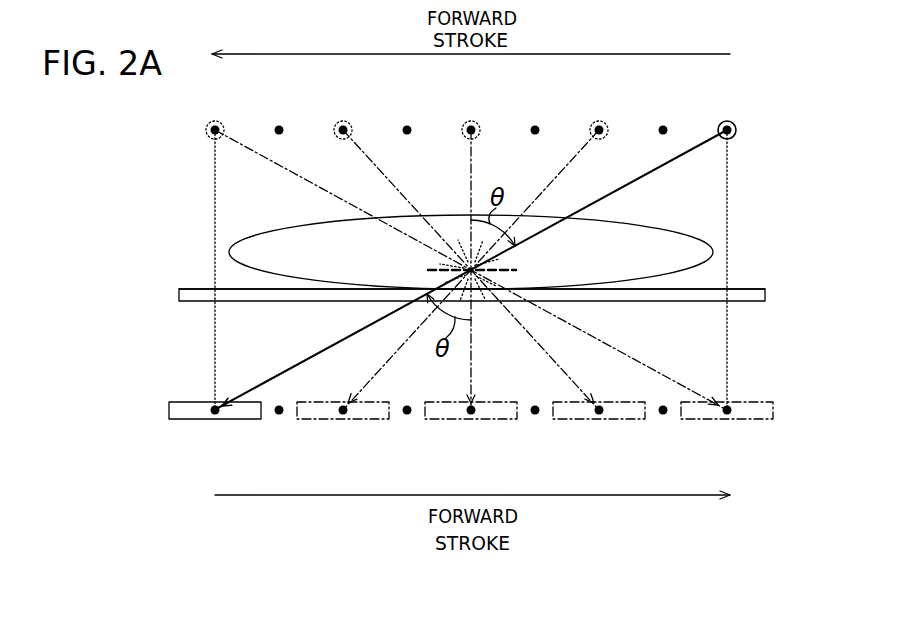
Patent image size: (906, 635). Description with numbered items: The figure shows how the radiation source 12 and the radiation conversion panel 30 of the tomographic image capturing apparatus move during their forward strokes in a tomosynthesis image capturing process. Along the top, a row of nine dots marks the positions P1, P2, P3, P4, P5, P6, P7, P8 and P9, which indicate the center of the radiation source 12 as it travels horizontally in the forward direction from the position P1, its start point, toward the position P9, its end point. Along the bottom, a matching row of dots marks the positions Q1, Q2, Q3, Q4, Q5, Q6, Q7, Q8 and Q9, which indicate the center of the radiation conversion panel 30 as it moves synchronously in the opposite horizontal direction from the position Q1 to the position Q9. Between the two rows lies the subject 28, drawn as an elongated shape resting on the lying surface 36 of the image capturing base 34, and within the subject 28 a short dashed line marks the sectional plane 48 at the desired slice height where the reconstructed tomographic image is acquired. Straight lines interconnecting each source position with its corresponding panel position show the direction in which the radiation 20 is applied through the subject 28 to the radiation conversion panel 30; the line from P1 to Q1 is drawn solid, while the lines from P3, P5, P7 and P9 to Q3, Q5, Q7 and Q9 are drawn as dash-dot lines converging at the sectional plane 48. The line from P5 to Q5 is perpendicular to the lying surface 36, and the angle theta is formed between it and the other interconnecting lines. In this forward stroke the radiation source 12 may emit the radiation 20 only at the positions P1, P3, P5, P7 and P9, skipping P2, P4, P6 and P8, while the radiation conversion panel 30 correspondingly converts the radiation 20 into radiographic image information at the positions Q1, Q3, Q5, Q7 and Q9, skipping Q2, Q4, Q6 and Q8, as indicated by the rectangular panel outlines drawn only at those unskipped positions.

The radiation source 12 is at (206, 140).
The radiation 20 is at (696, 174).
The subject 28 is at (681, 236).
The radiation conversion panel 30 is at (183, 401).
The image capturing base 34 is at (765, 296).
The lying surface 36 is at (764, 289).
The sectional plane 48 is at (515, 270).
The position P1 is at (726, 124).
The position P2 is at (662, 124).
The position P3 is at (598, 124).
The position P4 is at (534, 124).
The position P5 is at (470, 124).
The position P6 is at (406, 124).
The position P7 is at (342, 124).
The position P8 is at (278, 124).
The position P9 is at (214, 124).
The position Q1 is at (215, 415).
The position Q2 is at (279, 415).
The position Q3 is at (343, 415).
The position Q4 is at (407, 415).
The position Q5 is at (471, 415).
The position Q6 is at (535, 415).
The position Q7 is at (599, 415).
The position Q8 is at (663, 415).
The position Q9 is at (727, 415).